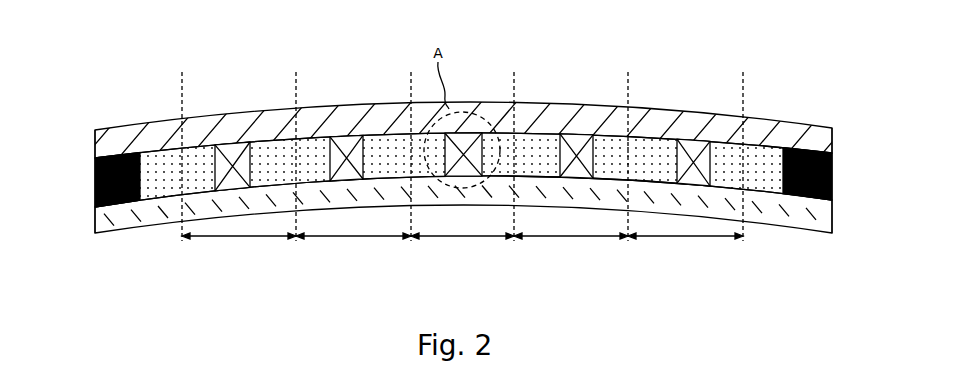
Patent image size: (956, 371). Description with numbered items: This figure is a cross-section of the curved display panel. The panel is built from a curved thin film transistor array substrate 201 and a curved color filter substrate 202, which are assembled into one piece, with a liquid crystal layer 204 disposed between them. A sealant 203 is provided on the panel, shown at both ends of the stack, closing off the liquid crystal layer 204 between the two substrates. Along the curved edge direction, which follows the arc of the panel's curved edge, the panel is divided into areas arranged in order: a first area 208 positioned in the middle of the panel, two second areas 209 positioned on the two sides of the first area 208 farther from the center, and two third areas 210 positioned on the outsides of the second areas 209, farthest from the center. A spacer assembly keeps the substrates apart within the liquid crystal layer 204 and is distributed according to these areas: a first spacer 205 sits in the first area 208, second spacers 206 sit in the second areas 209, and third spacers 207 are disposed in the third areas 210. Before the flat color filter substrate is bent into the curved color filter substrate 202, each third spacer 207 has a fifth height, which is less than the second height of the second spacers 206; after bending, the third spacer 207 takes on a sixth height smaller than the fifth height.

The curved thin film transistor array substrate 201 is at (166, 128).
The curved color filter substrate 202 is at (166, 222).
The sealant 203 is at (122, 160).
The liquid crystal layer 204 is at (283, 150).
The first spacer 205 is at (446, 132).
The second spacer 206 is at (343, 136).
The third spacer 207 is at (238, 144).
The first area 208 is at (462, 238).
The second area 209 is at (355, 238).
The third area 210 is at (240, 238).